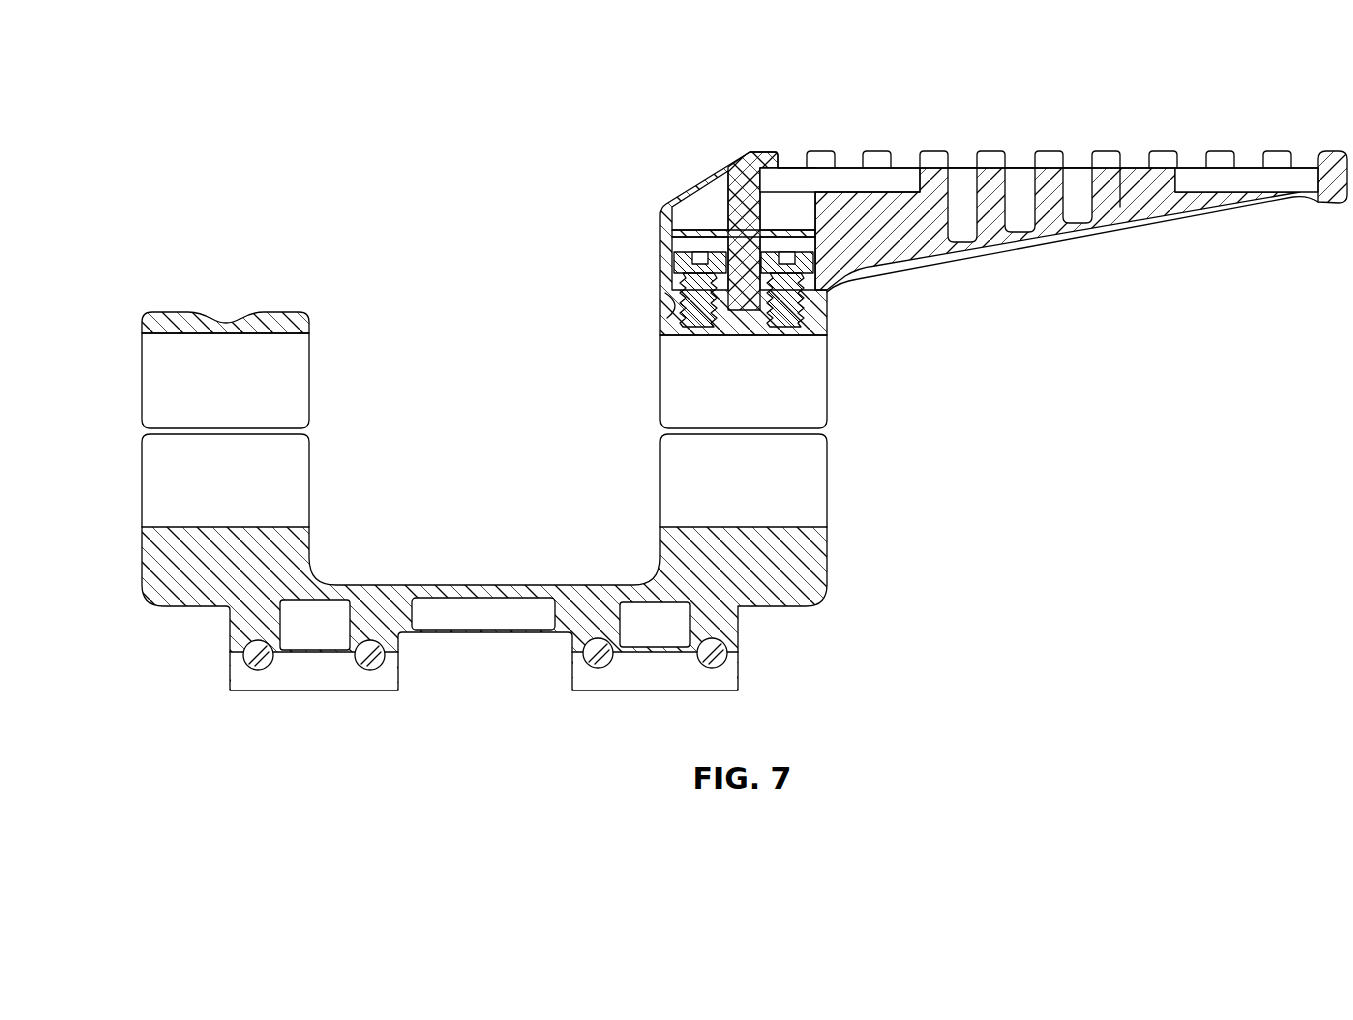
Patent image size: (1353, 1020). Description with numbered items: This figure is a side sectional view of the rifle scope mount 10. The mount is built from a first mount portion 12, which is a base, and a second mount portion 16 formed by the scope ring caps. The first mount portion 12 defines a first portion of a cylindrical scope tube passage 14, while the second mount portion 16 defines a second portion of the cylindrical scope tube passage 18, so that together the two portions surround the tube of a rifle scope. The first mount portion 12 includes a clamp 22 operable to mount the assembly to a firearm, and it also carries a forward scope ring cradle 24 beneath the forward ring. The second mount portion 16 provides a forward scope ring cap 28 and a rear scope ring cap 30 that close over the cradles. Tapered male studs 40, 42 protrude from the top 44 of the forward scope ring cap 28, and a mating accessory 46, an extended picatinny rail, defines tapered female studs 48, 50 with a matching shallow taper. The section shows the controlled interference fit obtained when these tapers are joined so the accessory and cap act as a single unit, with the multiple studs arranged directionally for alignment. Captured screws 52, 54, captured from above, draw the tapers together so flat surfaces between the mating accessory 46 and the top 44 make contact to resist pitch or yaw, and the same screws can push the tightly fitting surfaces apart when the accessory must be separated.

The rifle scope mount 10 is at (120, 196).
The first mount portion 12 is at (435, 578).
The first portion of cylindrical scope tube passage 14 is at (295, 485).
The second mount portion 16 is at (652, 340).
The second portion of cylindrical scope tube passage 18 is at (295, 383).
The clamp 22 is at (400, 682).
The forward scope ring cradle 24 is at (827, 573).
The forward scope ring cap 28 is at (826, 330).
The rear scope ring cap 30 is at (300, 311).
The tapered male stud 40 is at (833, 292).
The tapered male stud 42 is at (672, 290).
The top 44 is at (740, 334).
The mating accessory 46 is at (995, 148).
The tapered female stud 48 is at (772, 333).
The tapered female stud 50 is at (672, 312).
The captured screw 52 is at (805, 237).
The captured screw 54 is at (720, 247).